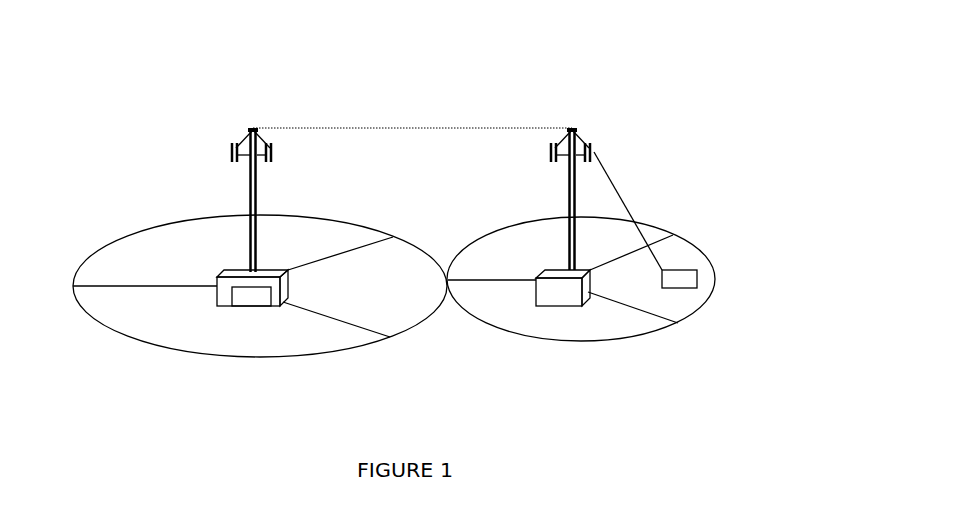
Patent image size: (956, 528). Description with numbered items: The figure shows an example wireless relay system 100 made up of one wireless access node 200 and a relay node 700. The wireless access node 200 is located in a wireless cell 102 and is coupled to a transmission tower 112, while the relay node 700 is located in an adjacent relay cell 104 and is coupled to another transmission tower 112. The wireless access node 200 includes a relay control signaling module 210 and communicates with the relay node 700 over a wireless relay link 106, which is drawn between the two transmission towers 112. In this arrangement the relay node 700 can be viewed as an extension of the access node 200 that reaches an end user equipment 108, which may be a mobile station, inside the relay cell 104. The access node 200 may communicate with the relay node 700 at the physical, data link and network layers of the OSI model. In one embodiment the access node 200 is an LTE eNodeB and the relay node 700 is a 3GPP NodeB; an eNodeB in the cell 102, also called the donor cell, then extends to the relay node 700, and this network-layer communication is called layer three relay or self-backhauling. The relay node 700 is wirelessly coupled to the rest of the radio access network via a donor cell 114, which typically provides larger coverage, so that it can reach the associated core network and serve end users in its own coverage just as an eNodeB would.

The wireless relay system 100 is at (756, 61).
The wireless cell 102 is at (140, 230).
The relay cell 104 is at (662, 227).
The wireless relay link 106 is at (394, 128).
The end user equipment 108 is at (683, 288).
The transmission tower 112 is at (548, 155).
The donor cell 114 is at (408, 293).
The wireless access node 200 is at (225, 307).
The relay control signaling module 210 is at (257, 307).
The relay node 700 is at (565, 306).